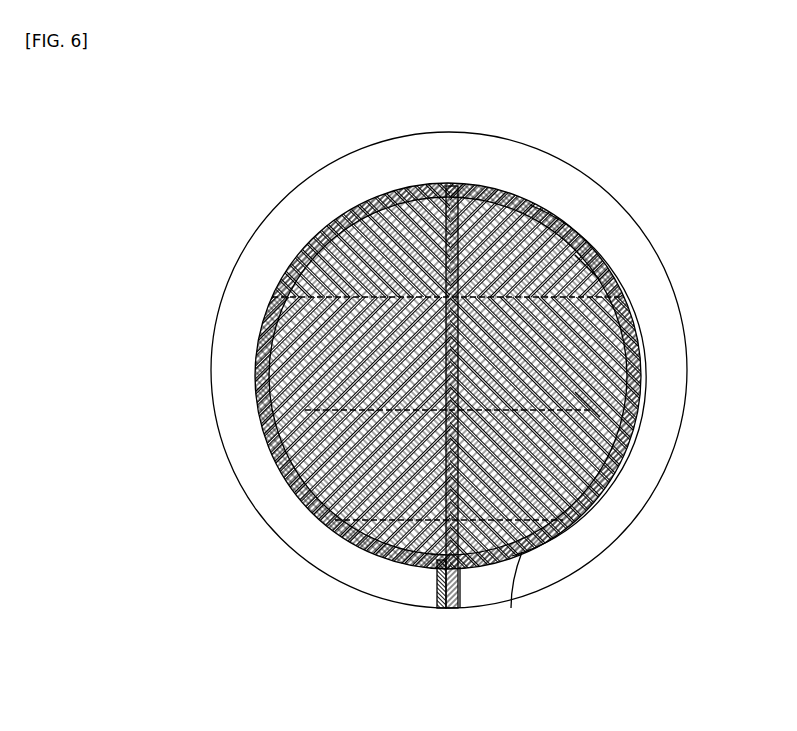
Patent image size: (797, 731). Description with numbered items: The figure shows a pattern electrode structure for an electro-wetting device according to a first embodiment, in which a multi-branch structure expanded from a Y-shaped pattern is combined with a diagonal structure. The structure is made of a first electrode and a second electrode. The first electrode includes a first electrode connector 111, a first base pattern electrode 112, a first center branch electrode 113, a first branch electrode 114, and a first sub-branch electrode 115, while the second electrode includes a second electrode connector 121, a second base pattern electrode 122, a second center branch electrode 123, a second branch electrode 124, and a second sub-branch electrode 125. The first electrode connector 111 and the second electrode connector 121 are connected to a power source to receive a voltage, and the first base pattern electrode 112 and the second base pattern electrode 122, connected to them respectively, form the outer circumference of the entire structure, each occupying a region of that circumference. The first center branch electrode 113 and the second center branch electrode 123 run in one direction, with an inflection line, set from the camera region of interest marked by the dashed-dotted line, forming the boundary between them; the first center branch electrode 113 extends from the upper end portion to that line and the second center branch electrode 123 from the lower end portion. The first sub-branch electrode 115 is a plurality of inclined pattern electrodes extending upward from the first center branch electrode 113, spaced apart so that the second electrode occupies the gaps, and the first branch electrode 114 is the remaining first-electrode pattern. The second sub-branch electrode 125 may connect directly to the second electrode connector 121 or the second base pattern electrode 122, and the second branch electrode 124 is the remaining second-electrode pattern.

The first electrode connector 111 is at (441, 608).
The first base pattern electrode 112 is at (320, 232).
The first center branch electrode 113 is at (473, 203).
The first branch electrode 114 is at (392, 210).
The first sub-branch electrode 115 is at (482, 210).
The second electrode connector 121 is at (456, 608).
The second base pattern electrode 122 is at (580, 232).
The second center branch electrode 123 is at (511, 568).
The second branch electrode 124 is at (575, 262).
The second sub-branch electrode 125 is at (578, 527).